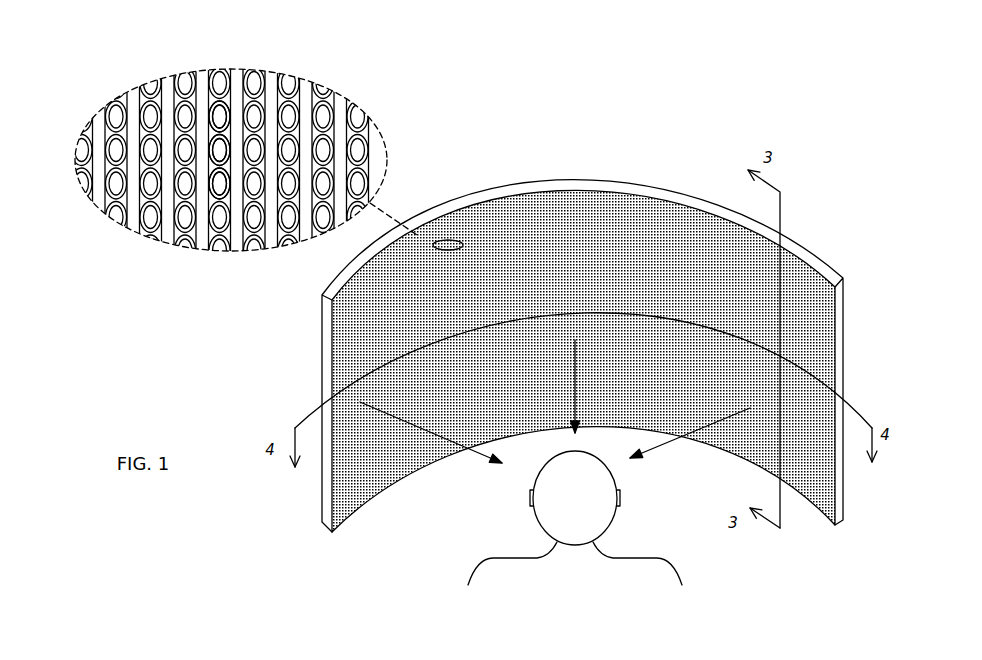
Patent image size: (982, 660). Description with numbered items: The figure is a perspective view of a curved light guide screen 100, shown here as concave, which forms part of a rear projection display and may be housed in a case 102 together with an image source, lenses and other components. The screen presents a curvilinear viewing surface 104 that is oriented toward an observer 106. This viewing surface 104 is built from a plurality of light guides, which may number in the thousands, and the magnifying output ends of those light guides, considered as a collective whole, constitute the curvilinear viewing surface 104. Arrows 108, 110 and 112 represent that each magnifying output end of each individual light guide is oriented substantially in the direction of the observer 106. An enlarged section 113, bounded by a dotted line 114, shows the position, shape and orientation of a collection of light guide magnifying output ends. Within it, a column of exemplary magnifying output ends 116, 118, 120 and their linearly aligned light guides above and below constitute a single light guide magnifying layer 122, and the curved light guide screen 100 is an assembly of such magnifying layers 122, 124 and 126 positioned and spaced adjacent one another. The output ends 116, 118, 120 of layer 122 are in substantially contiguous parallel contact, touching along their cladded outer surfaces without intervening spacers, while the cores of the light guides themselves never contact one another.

The curved light guide screen 100 is at (599, 315).
The case 102 is at (599, 356).
The curvilinear viewing surface 104 is at (583, 361).
The observer 106 is at (575, 518).
The arrow 108 is at (425, 428).
The arrow 110 is at (577, 386).
The arrow 112 is at (688, 433).
The enlarged section 113 is at (168, 258).
The dotted line 114 is at (388, 168).
The magnifying output end 116 is at (215, 117).
The magnifying output end 118 is at (217, 153).
The magnifying output end 120 is at (217, 187).
The light guide magnifying layer 122 is at (233, 67).
The light guide magnifying layer 124 is at (238, 67).
The light guide magnifying layer 126 is at (275, 70).